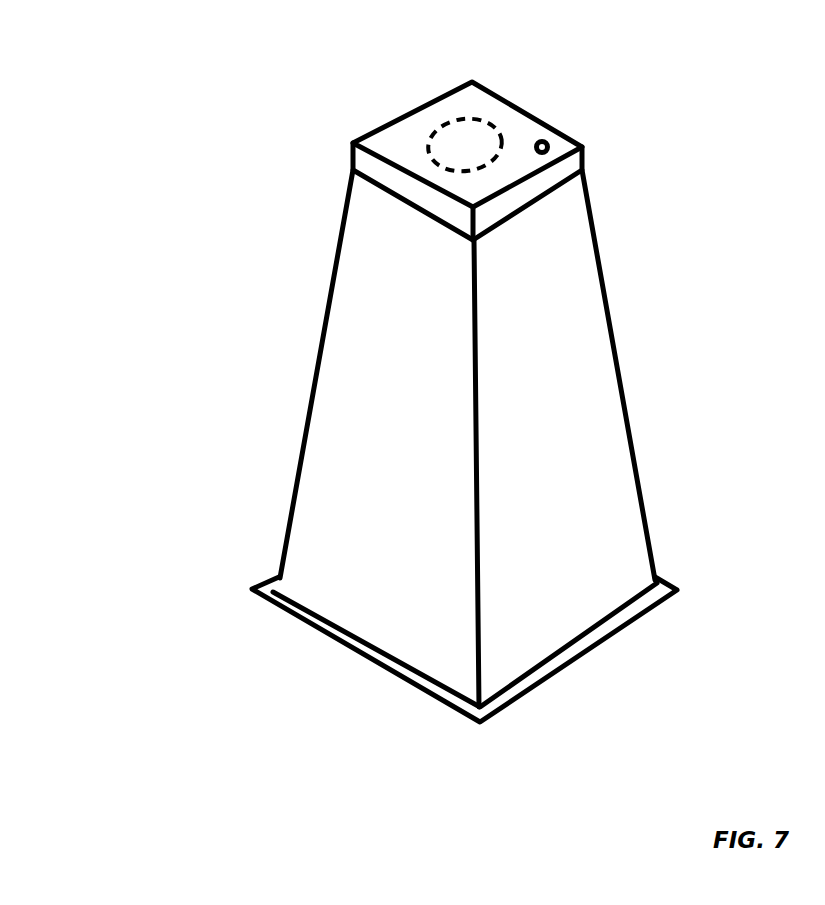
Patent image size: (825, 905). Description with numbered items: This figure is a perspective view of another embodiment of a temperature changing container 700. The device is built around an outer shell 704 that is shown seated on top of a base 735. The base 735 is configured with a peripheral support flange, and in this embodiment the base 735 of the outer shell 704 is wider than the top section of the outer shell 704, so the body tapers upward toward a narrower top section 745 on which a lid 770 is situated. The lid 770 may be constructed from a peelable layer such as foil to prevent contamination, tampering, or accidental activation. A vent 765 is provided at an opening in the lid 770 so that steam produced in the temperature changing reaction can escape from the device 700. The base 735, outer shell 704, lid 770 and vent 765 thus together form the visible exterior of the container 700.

The temperature changing container 700 is at (243, 213).
The outer shell 704 is at (348, 423).
The top housing 745 is at (436, 110).
The lid 770 is at (508, 125).
The vent 765 is at (557, 135).
The base 735 is at (358, 660).